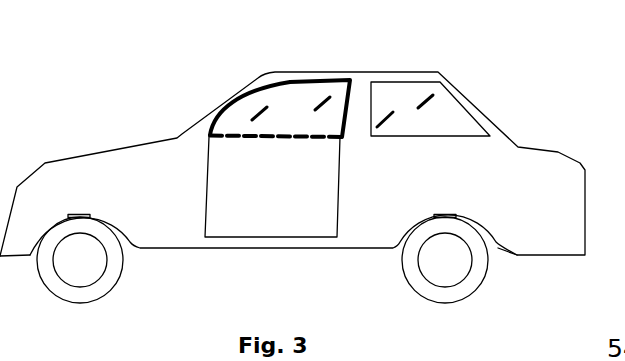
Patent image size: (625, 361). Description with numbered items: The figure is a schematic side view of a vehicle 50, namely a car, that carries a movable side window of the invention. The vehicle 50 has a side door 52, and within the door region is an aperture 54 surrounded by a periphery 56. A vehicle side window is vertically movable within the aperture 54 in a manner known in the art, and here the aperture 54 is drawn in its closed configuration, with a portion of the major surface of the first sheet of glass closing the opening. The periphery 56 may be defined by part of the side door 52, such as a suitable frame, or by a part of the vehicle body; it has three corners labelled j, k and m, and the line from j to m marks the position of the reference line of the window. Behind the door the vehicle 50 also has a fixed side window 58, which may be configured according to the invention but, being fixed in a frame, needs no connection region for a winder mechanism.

The vehicle 50 is at (125, 110).
The side door 52 is at (277, 210).
The aperture 54 is at (295, 102).
The periphery 56 is at (260, 86).
The fixed side window 58 is at (448, 117).